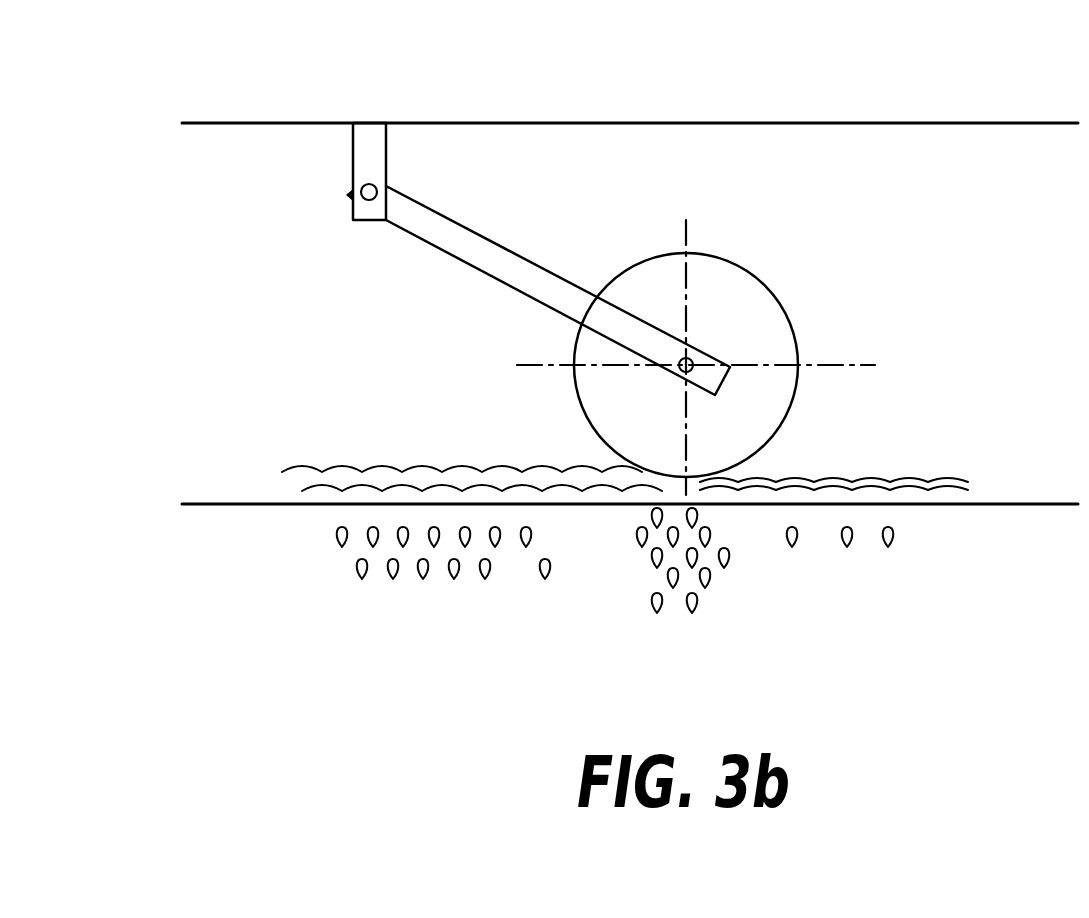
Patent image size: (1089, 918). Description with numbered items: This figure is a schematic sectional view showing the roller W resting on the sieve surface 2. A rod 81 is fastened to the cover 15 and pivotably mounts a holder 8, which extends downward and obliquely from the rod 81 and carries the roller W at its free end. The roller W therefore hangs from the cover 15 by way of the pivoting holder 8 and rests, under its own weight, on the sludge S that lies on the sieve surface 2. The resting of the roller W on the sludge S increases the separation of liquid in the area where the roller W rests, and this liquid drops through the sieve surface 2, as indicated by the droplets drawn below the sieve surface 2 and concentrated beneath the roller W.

The cover 15 is at (860, 122).
The rod 81 is at (363, 145).
The holder 8 is at (455, 240).
The roller W is at (727, 282).
The sludge S is at (448, 488).
The sieve surface 2 is at (910, 504).